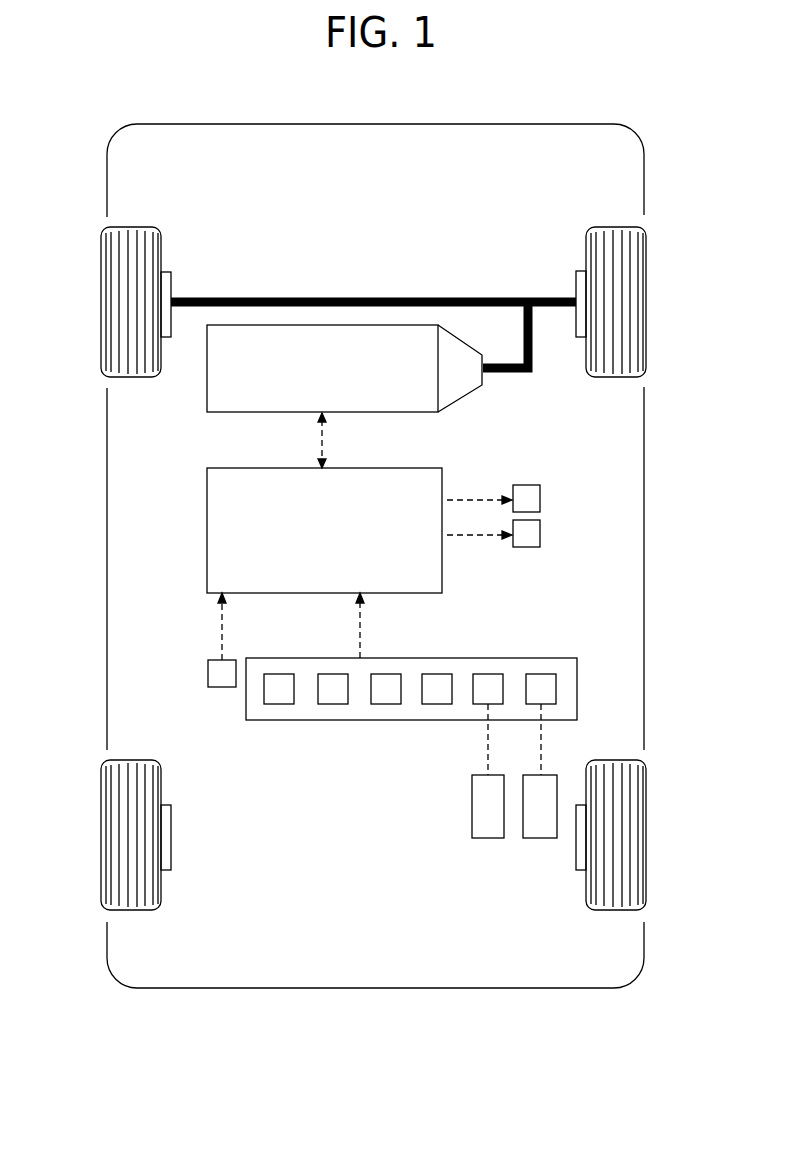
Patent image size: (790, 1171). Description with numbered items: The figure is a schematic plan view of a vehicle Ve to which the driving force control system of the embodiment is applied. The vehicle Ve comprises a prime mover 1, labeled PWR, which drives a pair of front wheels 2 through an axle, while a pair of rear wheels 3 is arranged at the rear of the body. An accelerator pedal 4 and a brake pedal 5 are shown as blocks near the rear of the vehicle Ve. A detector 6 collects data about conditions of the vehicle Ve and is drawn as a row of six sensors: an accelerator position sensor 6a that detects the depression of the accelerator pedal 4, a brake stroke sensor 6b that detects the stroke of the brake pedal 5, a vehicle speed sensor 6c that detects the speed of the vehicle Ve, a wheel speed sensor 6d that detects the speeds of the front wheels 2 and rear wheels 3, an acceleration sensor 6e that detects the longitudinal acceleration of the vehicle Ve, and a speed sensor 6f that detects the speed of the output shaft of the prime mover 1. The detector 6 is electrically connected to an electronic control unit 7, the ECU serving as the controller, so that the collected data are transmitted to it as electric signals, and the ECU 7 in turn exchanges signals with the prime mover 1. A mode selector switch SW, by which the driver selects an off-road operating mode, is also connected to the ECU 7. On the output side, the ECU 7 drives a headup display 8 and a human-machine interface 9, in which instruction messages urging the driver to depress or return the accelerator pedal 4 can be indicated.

The prime mover 1 is at (233, 413).
The front wheels 2 is at (118, 298).
The rear wheels 3 is at (113, 838).
The accelerator pedal 4 is at (543, 838).
The brake pedal 5 is at (488, 838).
The detector 6 is at (442, 676).
The accelerator position sensor 6a is at (545, 673).
The brake stroke sensor 6b is at (490, 673).
The vehicle speed sensor 6c is at (437, 705).
The wheel speed sensor 6d is at (387, 705).
The acceleration sensor 6e is at (334, 705).
The speed sensor 6f is at (280, 705).
The electronic control unit 7 is at (207, 525).
The headup display 8 is at (541, 497).
The human-machine interface 9 is at (541, 532).
The mode selector switch SW is at (222, 688).
The vehicle Ve is at (357, 849).